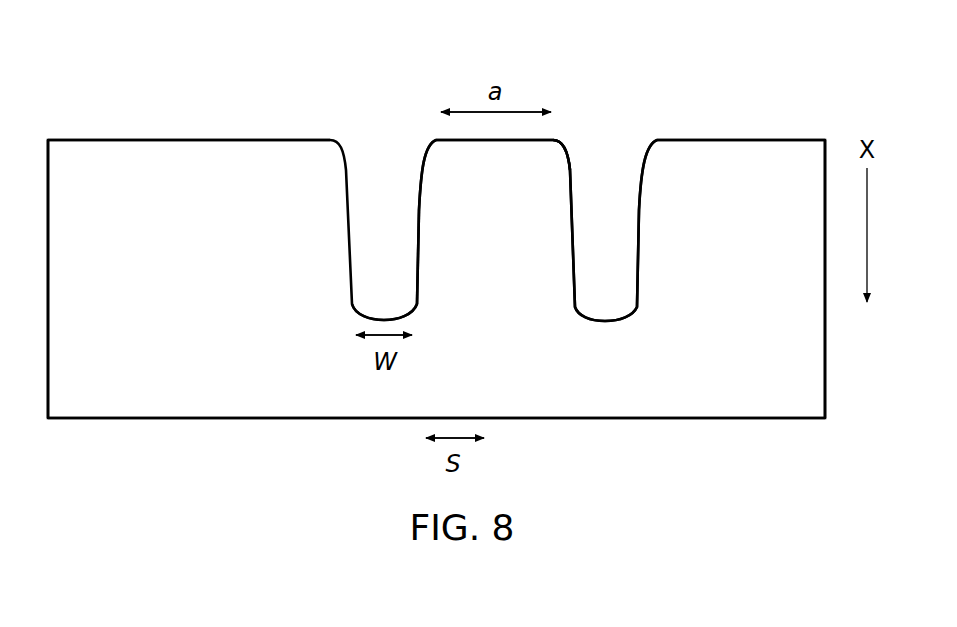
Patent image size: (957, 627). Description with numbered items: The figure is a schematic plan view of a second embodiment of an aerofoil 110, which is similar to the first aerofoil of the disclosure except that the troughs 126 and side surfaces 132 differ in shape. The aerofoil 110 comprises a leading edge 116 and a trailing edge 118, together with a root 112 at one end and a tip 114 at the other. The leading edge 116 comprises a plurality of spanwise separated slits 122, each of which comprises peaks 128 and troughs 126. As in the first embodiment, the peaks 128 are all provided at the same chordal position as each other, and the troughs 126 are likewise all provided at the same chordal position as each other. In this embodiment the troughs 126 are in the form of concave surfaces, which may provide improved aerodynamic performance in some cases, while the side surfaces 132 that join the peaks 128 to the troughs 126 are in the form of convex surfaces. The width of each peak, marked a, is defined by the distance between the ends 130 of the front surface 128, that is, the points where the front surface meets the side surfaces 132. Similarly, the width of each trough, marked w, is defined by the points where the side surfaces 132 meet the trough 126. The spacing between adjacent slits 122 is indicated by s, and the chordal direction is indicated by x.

The aerofoil 110 is at (580, 435).
The root 112 is at (50, 308).
The tip 114 is at (824, 302).
The leading edge 116 is at (240, 120).
The trailing edge 118 is at (277, 419).
The slits 122 is at (612, 197).
The troughs 126 is at (352, 305).
The peaks 128 is at (475, 138).
The ends 130 is at (435, 137).
The side surfaces 132 is at (420, 258).